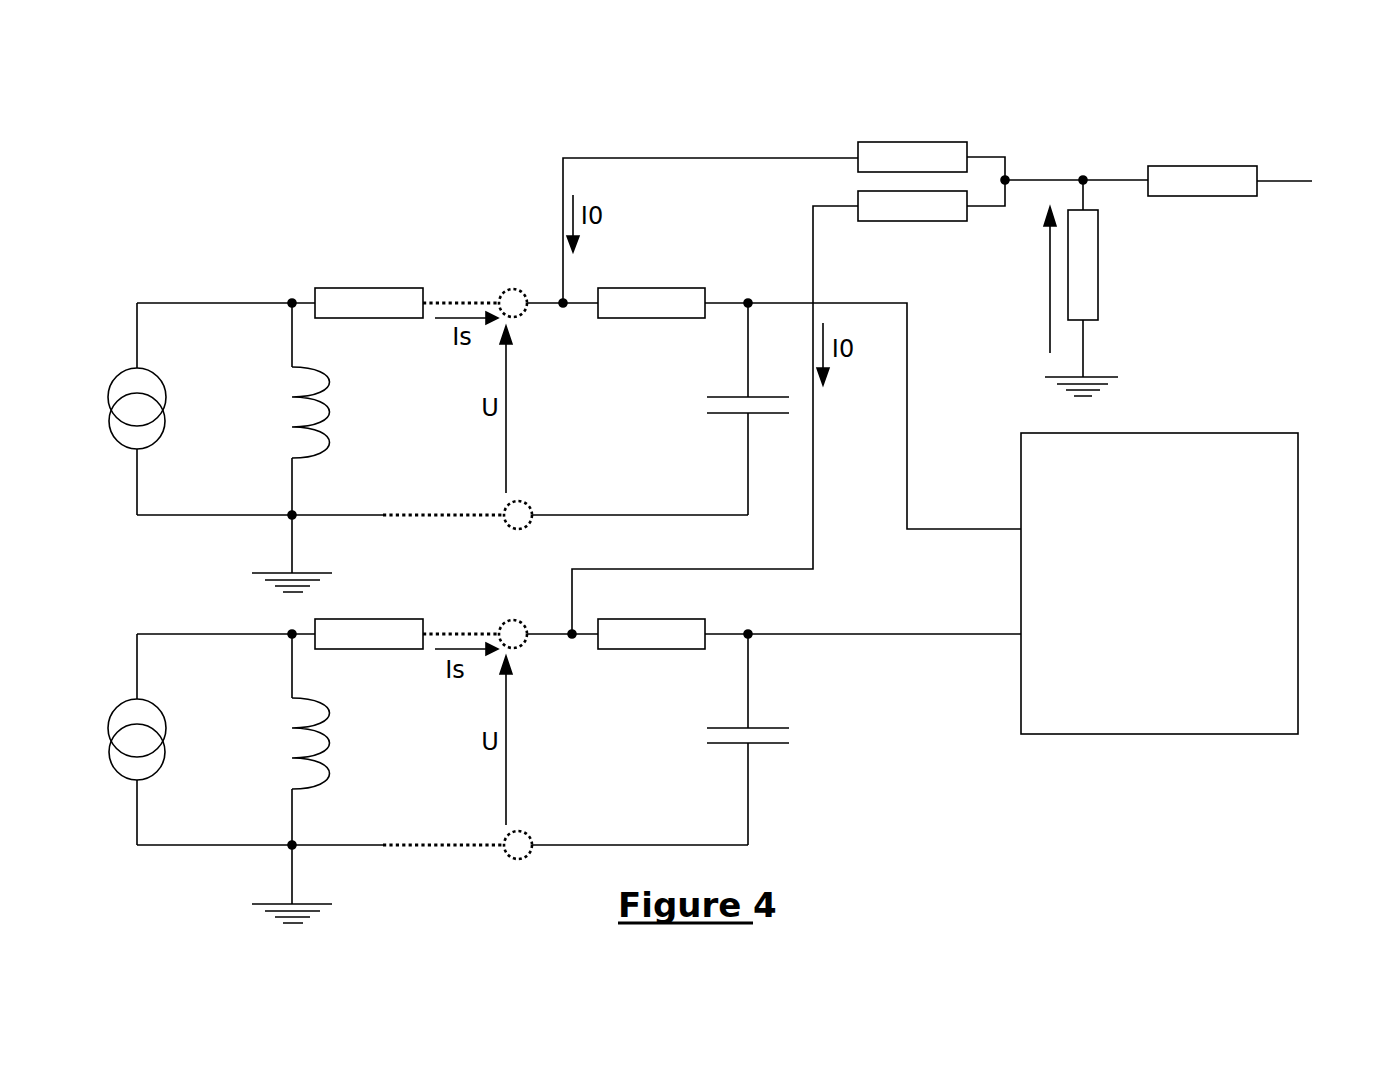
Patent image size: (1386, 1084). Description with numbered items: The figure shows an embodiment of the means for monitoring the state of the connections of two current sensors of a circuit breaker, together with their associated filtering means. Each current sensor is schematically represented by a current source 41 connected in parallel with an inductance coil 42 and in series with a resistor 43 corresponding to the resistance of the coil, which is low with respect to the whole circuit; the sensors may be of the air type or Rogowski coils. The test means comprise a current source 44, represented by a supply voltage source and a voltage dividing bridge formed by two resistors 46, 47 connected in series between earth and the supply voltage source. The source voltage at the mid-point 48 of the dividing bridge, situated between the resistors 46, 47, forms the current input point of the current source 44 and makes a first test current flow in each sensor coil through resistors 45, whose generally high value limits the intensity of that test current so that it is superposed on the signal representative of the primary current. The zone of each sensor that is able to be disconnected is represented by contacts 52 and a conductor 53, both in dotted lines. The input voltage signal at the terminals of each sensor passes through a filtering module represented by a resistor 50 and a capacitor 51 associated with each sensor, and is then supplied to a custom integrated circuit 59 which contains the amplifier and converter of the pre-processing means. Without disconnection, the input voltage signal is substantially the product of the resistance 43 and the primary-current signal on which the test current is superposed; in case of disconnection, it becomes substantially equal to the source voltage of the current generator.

The current source 41 is at (168, 437).
The inductance coil 42 is at (340, 392).
The resistor 43 is at (375, 290).
The current source 44 is at (1178, 252).
The resistors 45 is at (858, 150).
The resistor 46 is at (1098, 285).
The resistor 47 is at (1225, 166).
The mid-point 48 is at (1083, 173).
The resistor 50 is at (672, 288).
The capacitor 51 is at (735, 425).
The contacts 52 is at (530, 316).
The conductor 53 is at (483, 295).
The custom integrated circuit 59 is at (1175, 735).